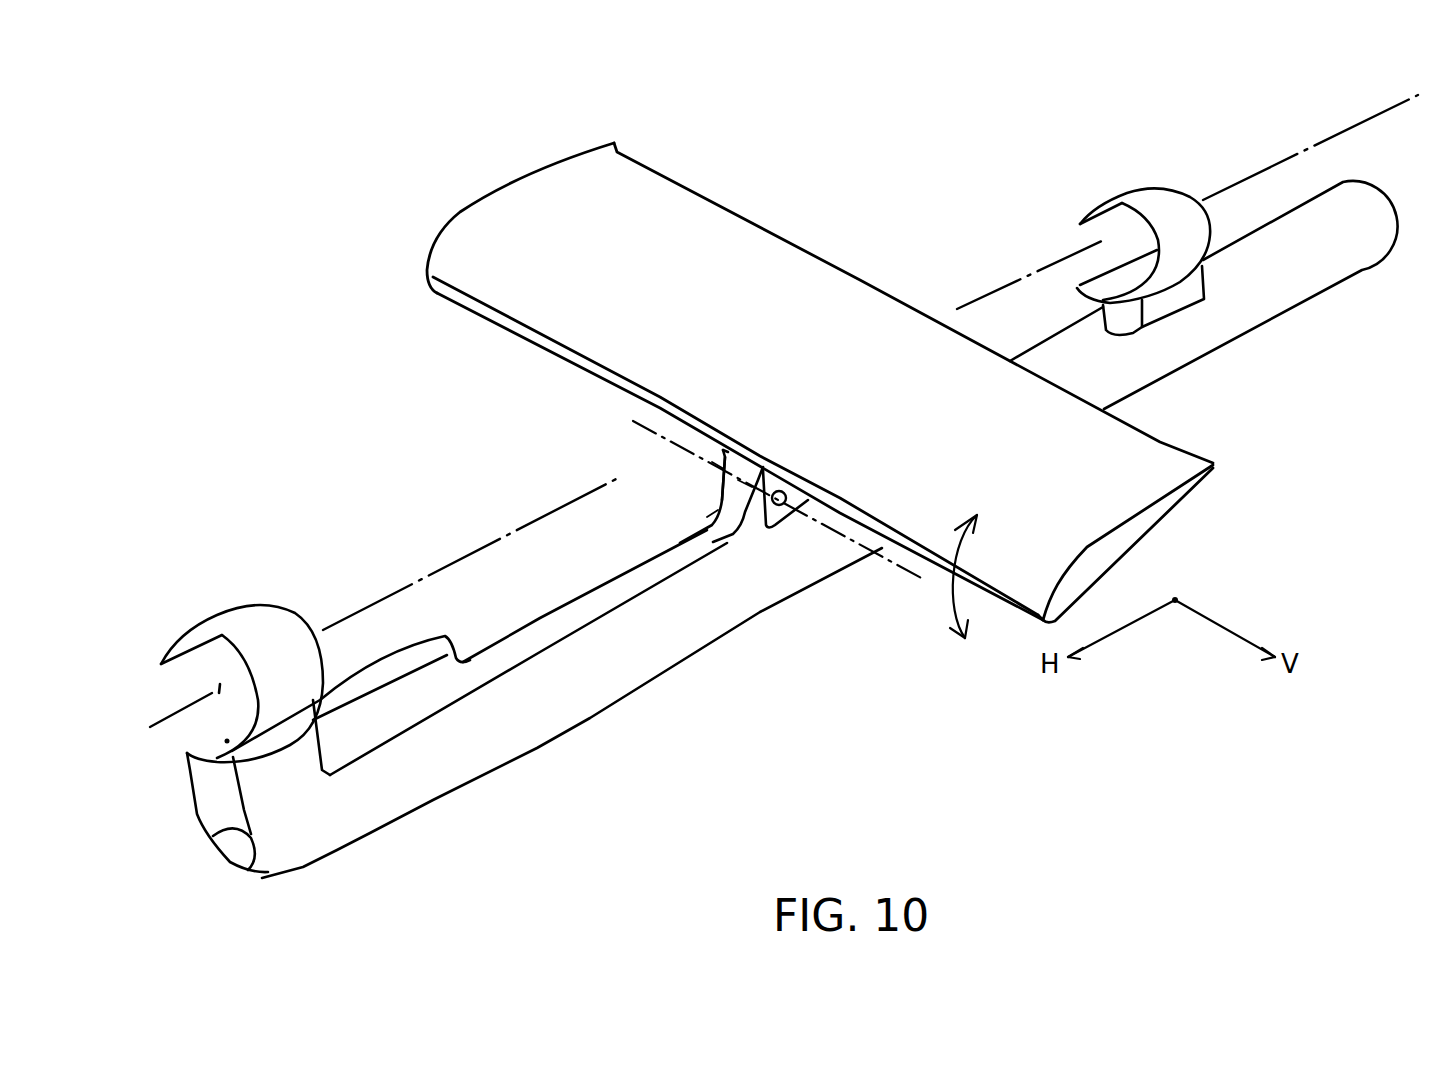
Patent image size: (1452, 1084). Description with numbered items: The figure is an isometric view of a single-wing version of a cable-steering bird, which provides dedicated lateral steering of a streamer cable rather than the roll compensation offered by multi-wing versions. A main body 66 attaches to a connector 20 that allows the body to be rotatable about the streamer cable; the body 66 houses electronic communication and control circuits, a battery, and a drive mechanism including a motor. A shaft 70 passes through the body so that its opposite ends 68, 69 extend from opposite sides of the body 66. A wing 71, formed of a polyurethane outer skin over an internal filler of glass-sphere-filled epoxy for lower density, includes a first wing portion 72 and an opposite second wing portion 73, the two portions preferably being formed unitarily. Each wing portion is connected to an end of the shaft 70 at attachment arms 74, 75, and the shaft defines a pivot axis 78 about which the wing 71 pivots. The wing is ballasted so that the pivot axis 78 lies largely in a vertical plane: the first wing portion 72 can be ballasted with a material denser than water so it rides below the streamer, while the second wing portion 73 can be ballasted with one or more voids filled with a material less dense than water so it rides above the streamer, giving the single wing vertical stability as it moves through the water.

The connector 20 is at (1178, 197).
The main body 66 is at (623, 686).
The end of shaft 68 is at (783, 505).
The end of shaft 69 is at (717, 463).
The shaft 70 is at (688, 523).
The wing 71 is at (772, 238).
The first wing portion 72 is at (1143, 447).
The second wing portion 73 is at (442, 290).
The attachment arm 74 is at (797, 497).
The attachment arm 75 is at (720, 457).
The pivot axis 78 is at (626, 418).